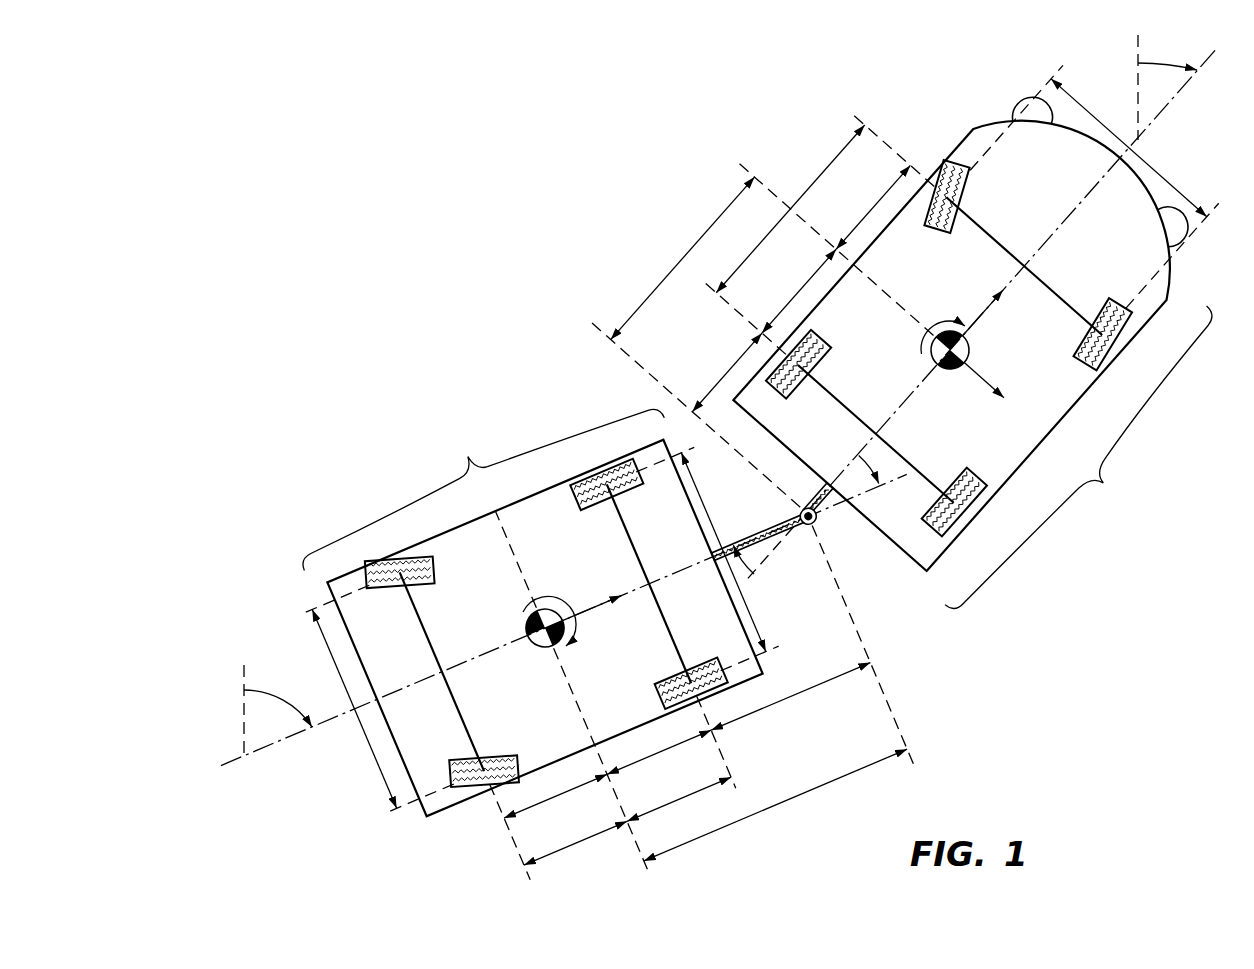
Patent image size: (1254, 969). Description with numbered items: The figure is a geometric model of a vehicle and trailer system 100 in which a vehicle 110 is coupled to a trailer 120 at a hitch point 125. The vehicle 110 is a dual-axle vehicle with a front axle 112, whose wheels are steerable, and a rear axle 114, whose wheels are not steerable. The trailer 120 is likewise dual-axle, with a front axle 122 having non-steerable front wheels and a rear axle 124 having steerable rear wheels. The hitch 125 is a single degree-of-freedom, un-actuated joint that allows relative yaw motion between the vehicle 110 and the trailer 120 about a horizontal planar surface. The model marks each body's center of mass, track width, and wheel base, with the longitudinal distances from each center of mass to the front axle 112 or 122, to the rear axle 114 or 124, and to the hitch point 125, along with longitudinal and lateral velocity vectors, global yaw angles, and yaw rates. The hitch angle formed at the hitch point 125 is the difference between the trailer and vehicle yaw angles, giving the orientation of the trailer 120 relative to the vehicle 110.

The vehicle and trailer system 100 is at (398, 213).
The vehicle 110 is at (893, 356).
The front axle 112 is at (985, 234).
The rear axle 114 is at (832, 396).
The trailer 120 is at (581, 635).
The front axle 122 is at (625, 527).
The rear axle 124 is at (463, 722).
The hitch point 125 is at (824, 524).